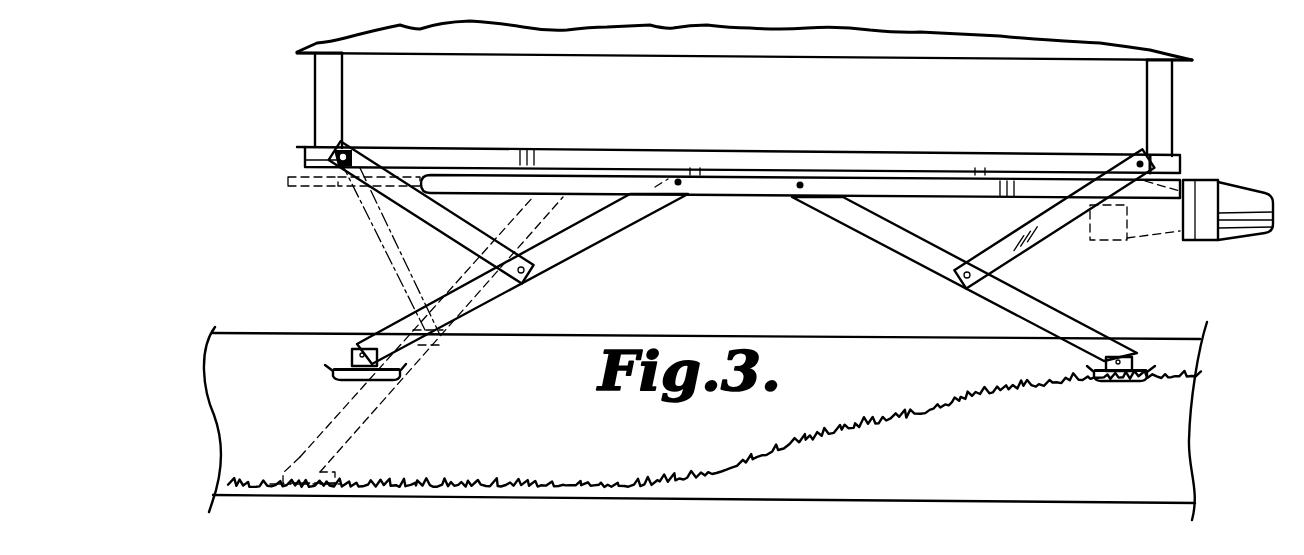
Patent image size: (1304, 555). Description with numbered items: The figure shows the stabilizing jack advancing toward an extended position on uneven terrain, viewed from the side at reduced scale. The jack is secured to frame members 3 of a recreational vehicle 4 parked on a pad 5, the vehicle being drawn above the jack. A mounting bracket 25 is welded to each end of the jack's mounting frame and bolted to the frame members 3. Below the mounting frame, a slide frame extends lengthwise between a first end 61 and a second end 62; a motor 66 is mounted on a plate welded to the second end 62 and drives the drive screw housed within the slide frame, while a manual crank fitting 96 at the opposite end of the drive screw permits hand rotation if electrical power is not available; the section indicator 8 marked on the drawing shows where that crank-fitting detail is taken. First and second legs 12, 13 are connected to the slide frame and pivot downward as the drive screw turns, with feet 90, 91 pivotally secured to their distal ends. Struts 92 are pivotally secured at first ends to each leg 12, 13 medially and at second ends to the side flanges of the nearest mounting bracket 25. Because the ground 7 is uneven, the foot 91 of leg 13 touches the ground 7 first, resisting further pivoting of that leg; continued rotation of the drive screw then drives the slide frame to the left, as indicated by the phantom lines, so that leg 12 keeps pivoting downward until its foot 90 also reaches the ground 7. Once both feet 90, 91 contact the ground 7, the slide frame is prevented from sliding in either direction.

The frame members 3 is at (315, 85).
The recreational vehicle 4 is at (500, 57).
The pad 5 is at (1190, 358).
The ground 7 is at (1187, 465).
The section line 8- 8 is at (947, 245).
The first leg 12 is at (570, 262).
The second leg 13 is at (903, 256).
The mounting bracket 25 is at (306, 148).
The first end 61 is at (430, 178).
The second end 62 is at (1182, 184).
The motor 66 is at (1248, 232).
The foot 90 is at (332, 378).
The foot 91 is at (1112, 387).
The struts 92 is at (447, 230).
The manual crank fitting 96 is at (416, 178).